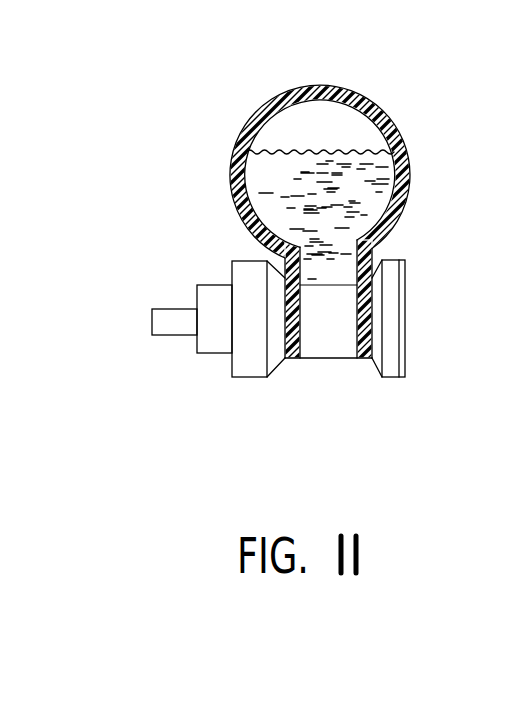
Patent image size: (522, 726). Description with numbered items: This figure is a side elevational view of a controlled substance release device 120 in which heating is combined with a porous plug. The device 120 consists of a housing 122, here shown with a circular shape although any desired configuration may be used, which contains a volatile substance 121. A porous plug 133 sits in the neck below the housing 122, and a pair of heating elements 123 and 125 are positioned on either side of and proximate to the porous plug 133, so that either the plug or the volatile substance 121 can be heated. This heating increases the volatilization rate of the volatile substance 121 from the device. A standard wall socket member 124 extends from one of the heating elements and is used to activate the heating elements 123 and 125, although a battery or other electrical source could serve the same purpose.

The controlled substance release device 120 is at (183, 97).
The volatile substance 121 is at (258, 186).
The housing 122 is at (338, 92).
The heating element 123 is at (250, 376).
The standard wall socket member 124 is at (167, 334).
The heating element 125 is at (395, 374).
The porous plug 133 is at (323, 355).